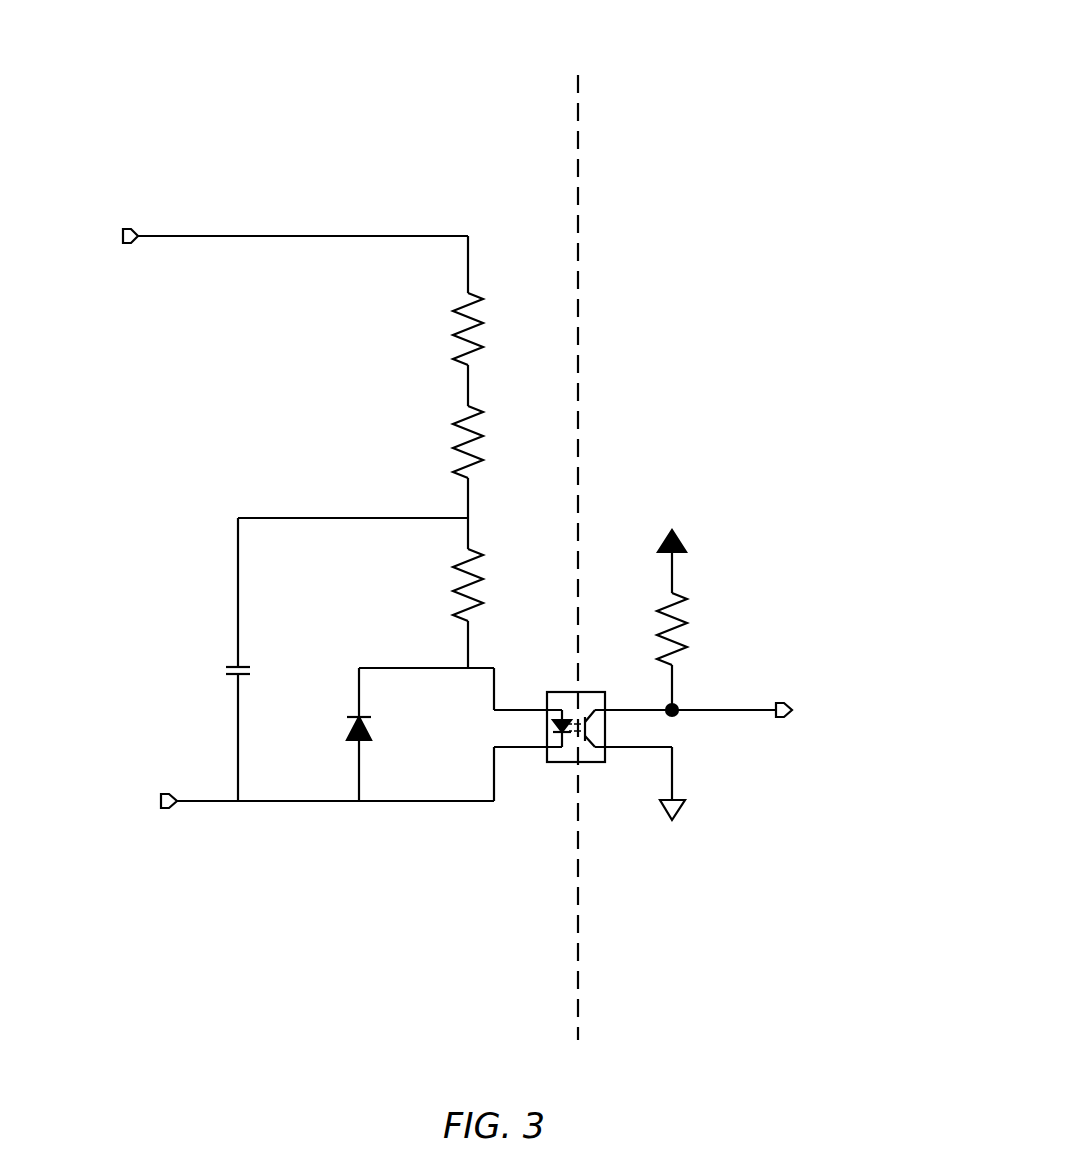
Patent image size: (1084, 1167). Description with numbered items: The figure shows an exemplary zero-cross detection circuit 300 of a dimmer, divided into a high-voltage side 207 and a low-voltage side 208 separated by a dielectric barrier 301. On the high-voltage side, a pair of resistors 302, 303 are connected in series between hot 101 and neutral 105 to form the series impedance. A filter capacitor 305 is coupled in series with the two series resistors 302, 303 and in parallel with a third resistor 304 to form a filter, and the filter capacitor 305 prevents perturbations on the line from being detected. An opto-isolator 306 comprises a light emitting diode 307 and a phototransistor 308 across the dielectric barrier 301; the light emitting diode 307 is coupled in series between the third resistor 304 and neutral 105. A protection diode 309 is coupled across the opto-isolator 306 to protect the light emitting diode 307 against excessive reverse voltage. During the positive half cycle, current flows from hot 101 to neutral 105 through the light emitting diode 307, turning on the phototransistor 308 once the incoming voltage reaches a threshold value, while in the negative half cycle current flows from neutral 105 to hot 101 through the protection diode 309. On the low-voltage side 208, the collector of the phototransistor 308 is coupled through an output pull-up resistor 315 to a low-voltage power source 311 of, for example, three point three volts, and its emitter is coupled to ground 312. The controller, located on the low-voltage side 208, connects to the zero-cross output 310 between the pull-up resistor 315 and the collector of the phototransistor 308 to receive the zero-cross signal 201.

The zero-cross detection circuit 300 is at (567, 29).
The high-voltage side 207 is at (432, 132).
The low-voltage side 208 is at (811, 132).
The dielectric barrier 301 is at (573, 174).
The hot 101 is at (94, 212).
The neutral 105 is at (105, 824).
The resistor R1 302 is at (449, 322).
The resistor R2 303 is at (449, 438).
The resistor R3 304 is at (449, 583).
The filter capacitor C1 305 is at (220, 672).
The diode D1 309 is at (341, 717).
The opto-isolator 306 is at (555, 768).
The light emitting diode 307 is at (562, 700).
The phototransistor 308 is at (590, 702).
The zero-cross output 310 is at (677, 713).
The low-voltage power source 311 is at (691, 538).
The resistor R4 315 is at (695, 627).
The ground 312 is at (673, 824).
The zero-cross signal 201 is at (856, 682).